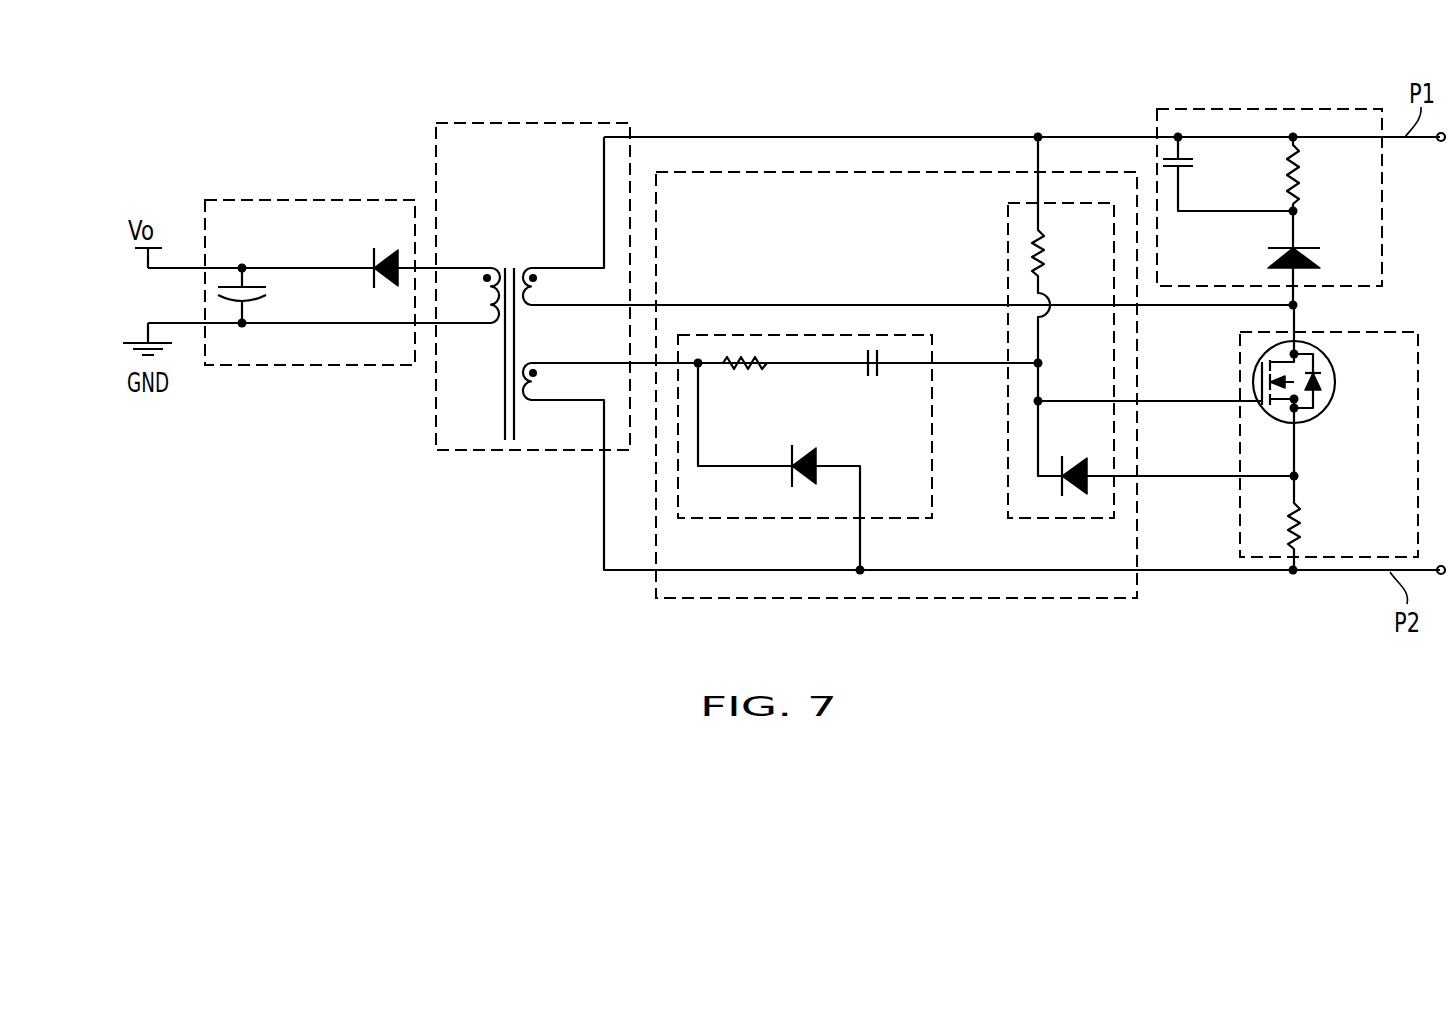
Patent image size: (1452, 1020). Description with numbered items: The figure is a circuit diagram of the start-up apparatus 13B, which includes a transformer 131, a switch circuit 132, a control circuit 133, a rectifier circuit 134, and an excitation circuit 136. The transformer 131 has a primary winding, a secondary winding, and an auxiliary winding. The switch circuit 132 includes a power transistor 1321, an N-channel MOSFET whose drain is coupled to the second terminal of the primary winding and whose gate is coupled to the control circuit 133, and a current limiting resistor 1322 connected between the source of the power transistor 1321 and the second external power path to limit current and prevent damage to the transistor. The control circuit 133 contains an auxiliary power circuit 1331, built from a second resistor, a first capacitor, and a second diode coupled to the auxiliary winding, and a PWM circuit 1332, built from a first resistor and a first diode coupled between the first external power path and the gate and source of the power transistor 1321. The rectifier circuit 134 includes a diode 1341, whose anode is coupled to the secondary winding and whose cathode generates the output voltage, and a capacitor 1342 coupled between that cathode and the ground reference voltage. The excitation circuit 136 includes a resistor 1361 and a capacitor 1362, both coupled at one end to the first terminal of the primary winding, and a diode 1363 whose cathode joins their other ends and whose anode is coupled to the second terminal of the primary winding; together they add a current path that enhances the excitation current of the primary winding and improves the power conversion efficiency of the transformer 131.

The start-up apparatus 13B is at (407, 534).
The transformer 131 is at (473, 123).
The switch circuit 132 is at (1240, 367).
The power transistor 1321 is at (1312, 420).
The current limiting resistor 1322 is at (1298, 511).
The control circuit 133 is at (1162, 617).
The auxiliary power circuit 1331 is at (932, 497).
The PWM circuit 1332 is at (1008, 235).
The rectifier circuit 134 is at (247, 200).
The diode 1341 is at (390, 252).
The capacitor 1342 is at (265, 296).
The excitation circuit 136 is at (1195, 109).
The resistor 1361 is at (1300, 176).
The capacitor 1362 is at (1226, 158).
The diode 1363 is at (1275, 263).